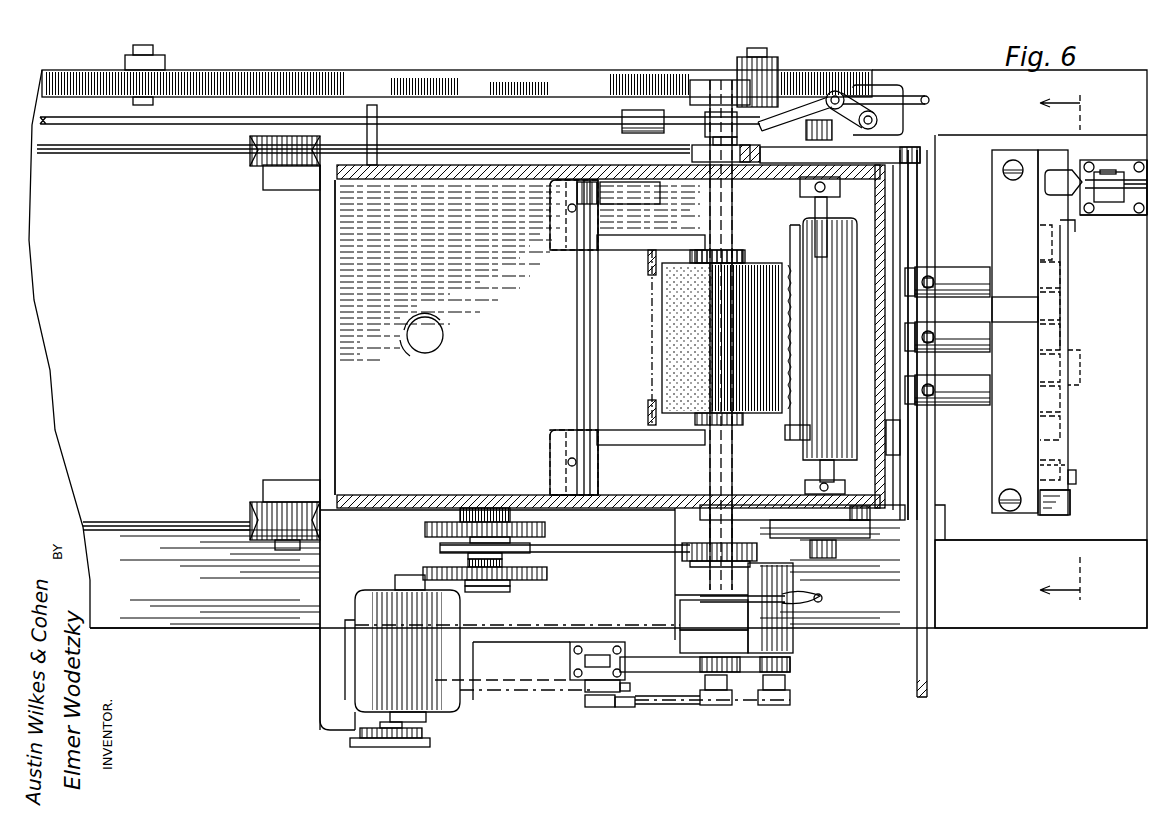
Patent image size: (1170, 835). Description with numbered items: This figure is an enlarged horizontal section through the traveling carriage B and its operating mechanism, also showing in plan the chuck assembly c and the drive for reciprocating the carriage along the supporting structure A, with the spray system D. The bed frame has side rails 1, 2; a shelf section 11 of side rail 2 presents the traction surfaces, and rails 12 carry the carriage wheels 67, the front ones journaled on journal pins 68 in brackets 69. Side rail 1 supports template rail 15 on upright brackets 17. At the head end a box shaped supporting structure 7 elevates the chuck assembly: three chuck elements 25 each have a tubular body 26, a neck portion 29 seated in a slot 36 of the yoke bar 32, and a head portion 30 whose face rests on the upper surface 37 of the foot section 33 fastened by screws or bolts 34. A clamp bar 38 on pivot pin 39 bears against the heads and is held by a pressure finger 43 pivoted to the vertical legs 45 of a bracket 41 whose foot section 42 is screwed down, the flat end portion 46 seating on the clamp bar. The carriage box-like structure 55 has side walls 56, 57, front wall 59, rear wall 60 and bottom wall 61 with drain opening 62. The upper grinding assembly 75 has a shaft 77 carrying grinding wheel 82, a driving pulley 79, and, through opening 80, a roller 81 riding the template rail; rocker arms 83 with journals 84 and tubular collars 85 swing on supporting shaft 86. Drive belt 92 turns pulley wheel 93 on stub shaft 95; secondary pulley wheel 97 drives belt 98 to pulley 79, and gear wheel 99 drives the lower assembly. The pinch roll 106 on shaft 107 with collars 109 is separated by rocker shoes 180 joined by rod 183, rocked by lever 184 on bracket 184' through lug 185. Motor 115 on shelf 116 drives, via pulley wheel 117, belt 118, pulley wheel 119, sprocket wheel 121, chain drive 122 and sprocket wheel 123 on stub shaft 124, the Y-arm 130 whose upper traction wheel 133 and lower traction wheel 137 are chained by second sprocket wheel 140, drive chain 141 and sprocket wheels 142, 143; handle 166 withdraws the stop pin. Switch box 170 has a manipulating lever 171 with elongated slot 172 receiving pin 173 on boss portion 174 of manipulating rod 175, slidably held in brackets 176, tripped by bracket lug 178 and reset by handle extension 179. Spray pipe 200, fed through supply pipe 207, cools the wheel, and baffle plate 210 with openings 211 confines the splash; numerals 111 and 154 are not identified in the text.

The side rail 1 is at (43, 72).
The side rail 2 is at (165, 628).
The box shaped supporting structure 7 is at (1142, 542).
The shelf section 11 is at (1053, 350).
The rails 12 is at (170, 153).
The template rail 15 is at (350, 72).
The upright brackets 17 is at (160, 64).
The chuck elements 25 is at (974, 268).
The tubular body 26 is at (967, 384).
The neck portion 29 is at (1002, 296).
The head portion 30 is at (1058, 398).
The yoke bar 32 is at (1015, 331).
The foot section 33 is at (1072, 500).
The screws or bolts 34 is at (999, 501).
The slots 36 is at (1025, 272).
The upper surface 37 is at (1054, 514).
The clamp bar 38 is at (1056, 450).
The pivot pin 39 is at (1078, 476).
The bracket 41 is at (1140, 218).
The foot section 42 is at (1112, 216).
The pressure finger 43 is at (1110, 160).
The vertical legs 45 is at (1140, 178).
The flat end portion 46 is at (1058, 168).
The box-like structure 55 is at (311, 436).
The side wall 56 is at (455, 180).
The side wall 57 is at (410, 495).
The front wall 59 is at (320, 256).
The rear wall 60 is at (918, 258).
The bottom wall 61 is at (500, 341).
The drain opening 62 is at (435, 350).
The wheels 67 is at (255, 160).
The journal pins 68 is at (705, 128).
The brackets 69 is at (300, 480).
The upper grinding assembly 75 is at (755, 257).
The shaft 77 is at (735, 222).
The driving pulley 79 is at (712, 564).
The opening 80 is at (680, 192).
The roller 81 is at (695, 80).
The grinding wheel 82 is at (668, 330).
The rocker arms 83 is at (612, 250).
The journal 84 is at (740, 240).
The tubular collar 85 is at (552, 240).
The supporting shaft 86 is at (577, 402).
The drive belt 92 is at (547, 572).
The pulley wheel 93 is at (515, 584).
The stub shaft 95 is at (490, 592).
The secondary pulley wheel 97 is at (440, 549).
The belt 98 is at (588, 553).
The gear wheel 99 is at (547, 529).
The roll 106 is at (822, 339).
The shaft 107 is at (846, 468).
The collars 109 is at (842, 195).
The nut 111 is at (810, 115).
The motor 115 is at (517, 648).
The shelf 116 is at (320, 664).
The pulley wheel 117 is at (430, 745).
The belt 118 is at (352, 742).
The pulley wheel 119 is at (372, 748).
The driven sprocket wheel 121 is at (438, 678).
The chain drive 122 is at (504, 692).
The sprocket wheel 123 is at (625, 687).
The stub shaft 124 is at (588, 706).
The Y-arm 130 is at (790, 665).
The upper traction wheel 133 is at (760, 612).
The lower traction wheel 137 is at (714, 641).
The second sprocket wheel 140 is at (628, 708).
The drive chain 141 is at (665, 706).
The sprocket wheel 142 is at (712, 706).
The sprocket wheel 143 is at (772, 706).
The bracket 154 is at (625, 645).
The handle 166 is at (822, 596).
The switch box 170 is at (903, 90).
The manipulating lever 171 is at (870, 112).
The elongated slot 172 is at (858, 95).
The pin 173 is at (840, 92).
The boss portion 174 is at (826, 90).
The manipulating rod 175 is at (128, 125).
The brackets 176 is at (643, 121).
The bracket lug 178 is at (372, 108).
The handle extension 179 is at (929, 98).
The rocker shoes 180 is at (905, 147).
The rod 183 is at (910, 230).
The lever 184 is at (944, 423).
The bracket 184' is at (963, 522).
The lug 185 is at (890, 447).
The spray pipe 200 is at (830, 228).
The supply pipe 207 is at (618, 197).
The baffle plate 210 is at (648, 278).
The openings 211 is at (648, 314).
The supporting structure A is at (229, 639).
The traveling carriage B is at (305, 378).
The spray system D is at (777, 437).
The chuck assembly c is at (1010, 241).